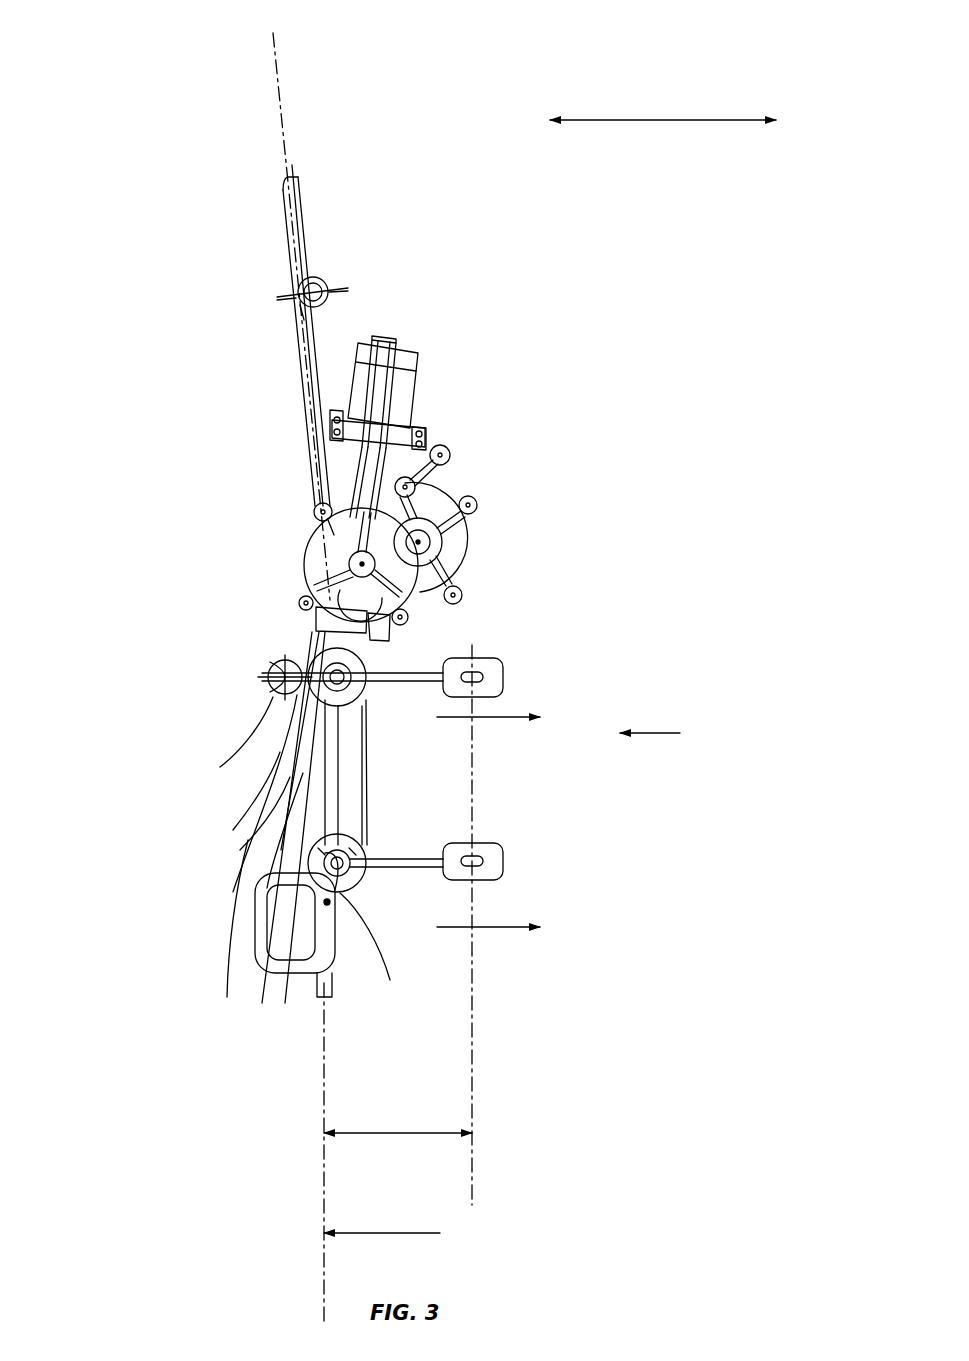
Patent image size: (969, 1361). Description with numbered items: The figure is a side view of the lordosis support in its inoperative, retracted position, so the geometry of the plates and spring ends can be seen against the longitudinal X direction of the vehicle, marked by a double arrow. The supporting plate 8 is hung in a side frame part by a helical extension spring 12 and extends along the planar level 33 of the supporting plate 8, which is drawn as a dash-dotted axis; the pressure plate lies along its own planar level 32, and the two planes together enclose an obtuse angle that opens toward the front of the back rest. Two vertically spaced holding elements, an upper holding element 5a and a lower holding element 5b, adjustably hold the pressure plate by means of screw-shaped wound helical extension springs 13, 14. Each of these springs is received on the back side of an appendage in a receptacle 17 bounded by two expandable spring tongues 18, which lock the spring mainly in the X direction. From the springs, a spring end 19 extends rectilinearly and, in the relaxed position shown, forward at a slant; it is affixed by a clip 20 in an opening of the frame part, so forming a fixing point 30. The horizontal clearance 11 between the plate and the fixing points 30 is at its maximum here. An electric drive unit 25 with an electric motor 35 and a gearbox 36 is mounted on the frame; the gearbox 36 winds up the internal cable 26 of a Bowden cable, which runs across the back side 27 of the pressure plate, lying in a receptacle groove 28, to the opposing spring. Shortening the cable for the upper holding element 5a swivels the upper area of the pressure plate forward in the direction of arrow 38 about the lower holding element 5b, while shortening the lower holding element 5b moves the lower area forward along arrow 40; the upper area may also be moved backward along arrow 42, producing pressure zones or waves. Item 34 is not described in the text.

The upper holding element 5a is at (405, 665).
The lower holding element 5b is at (395, 870).
The supporting plate 8 is at (300, 217).
The horizontal clearance 11 is at (405, 1133).
The helical extension spring 12 is at (320, 277).
The helical extension spring 13 is at (365, 953).
The helical extension spring 14 is at (320, 752).
The receptacle 17 is at (235, 960).
The spring tongue 18 is at (302, 830).
The spring end 19 is at (420, 665).
The clip 20 is at (527, 751).
The electric drive unit 25 is at (455, 445).
The internal cable 26 is at (272, 747).
The back side 27 is at (185, 716).
The receptacle groove 28 is at (275, 665).
The fixing point 30 is at (494, 659).
The planar level of the pressure plate 32 is at (322, 1178).
The planar level of the supporting plate 33 is at (281, 88).
The frame 34 is at (605, 617).
The electric motor 35 is at (420, 365).
The gearbox 36 is at (475, 500).
The arrow 38 is at (505, 715).
The arrow 40 is at (480, 928).
The arrow 42 is at (660, 733).
The X-direction X is at (658, 120).